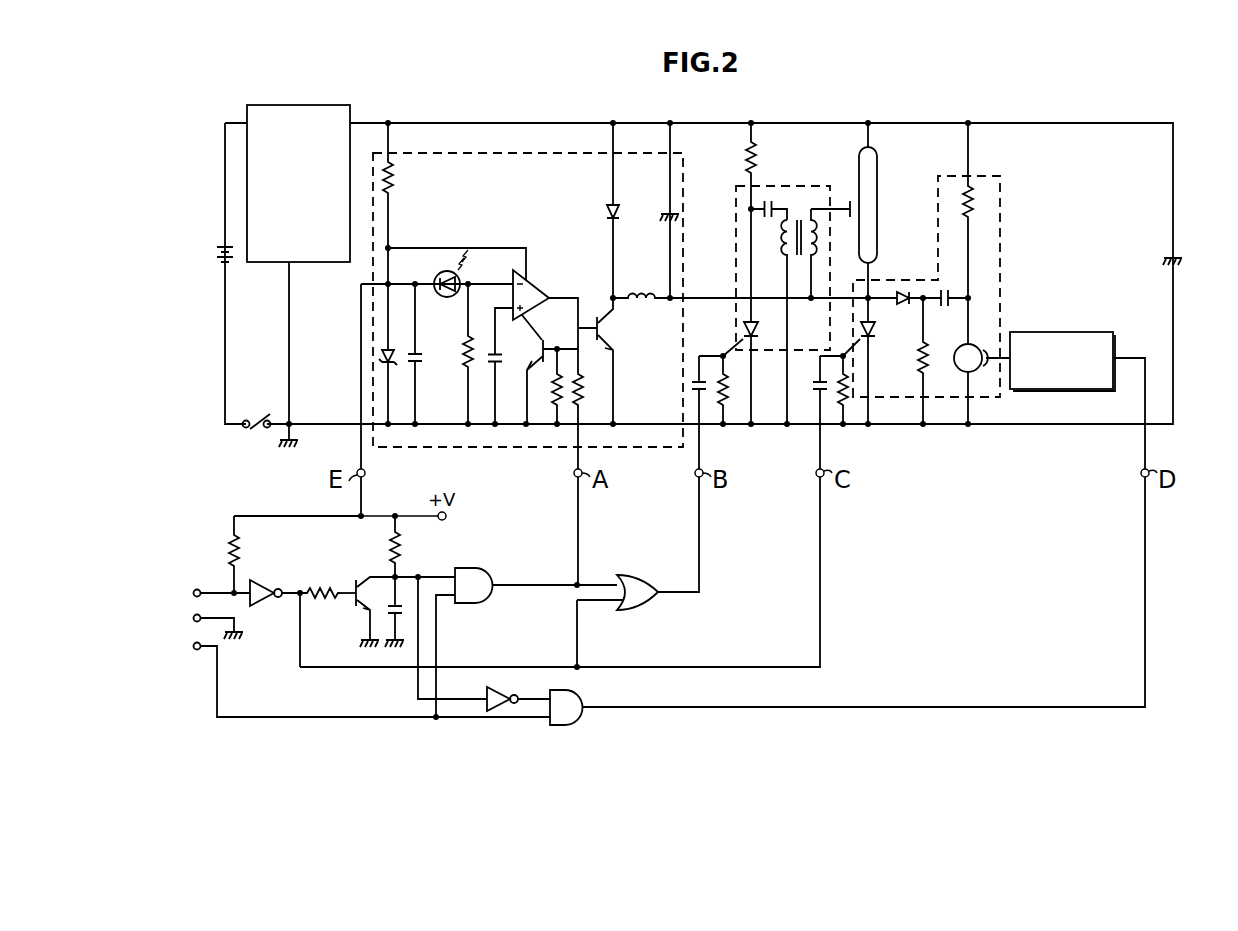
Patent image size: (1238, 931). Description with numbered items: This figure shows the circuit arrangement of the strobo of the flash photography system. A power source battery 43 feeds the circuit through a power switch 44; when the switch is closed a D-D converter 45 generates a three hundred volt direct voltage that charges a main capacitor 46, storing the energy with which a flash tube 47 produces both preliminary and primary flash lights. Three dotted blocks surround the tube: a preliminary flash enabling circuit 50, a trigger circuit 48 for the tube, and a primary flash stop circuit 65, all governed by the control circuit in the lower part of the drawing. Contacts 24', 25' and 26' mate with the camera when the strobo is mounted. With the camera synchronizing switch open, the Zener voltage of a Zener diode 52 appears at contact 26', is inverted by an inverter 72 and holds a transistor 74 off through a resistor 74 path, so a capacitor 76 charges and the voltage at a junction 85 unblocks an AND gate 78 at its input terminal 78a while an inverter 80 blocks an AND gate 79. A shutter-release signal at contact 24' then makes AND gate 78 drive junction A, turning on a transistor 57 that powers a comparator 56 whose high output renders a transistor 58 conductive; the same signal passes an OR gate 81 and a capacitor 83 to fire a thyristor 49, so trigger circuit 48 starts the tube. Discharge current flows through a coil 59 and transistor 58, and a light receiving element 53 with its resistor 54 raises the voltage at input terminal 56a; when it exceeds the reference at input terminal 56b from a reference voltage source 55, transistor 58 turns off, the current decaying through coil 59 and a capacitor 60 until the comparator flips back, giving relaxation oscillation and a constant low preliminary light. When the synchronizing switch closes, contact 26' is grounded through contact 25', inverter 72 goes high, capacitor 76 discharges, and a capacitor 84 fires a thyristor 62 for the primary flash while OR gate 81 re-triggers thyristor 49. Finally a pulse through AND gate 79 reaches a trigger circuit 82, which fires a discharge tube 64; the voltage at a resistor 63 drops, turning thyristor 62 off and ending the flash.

The power source battery 43 is at (215, 250).
The power switch 44 is at (253, 440).
The D-D converter 45 is at (313, 105).
The main capacitor 46 is at (1180, 262).
The flash tube 47 is at (872, 172).
The trigger circuit 48 is at (766, 186).
The thyristor 49 is at (743, 328).
The preliminary flash enabling circuit 50 is at (475, 155).
The Zener diode 52 is at (381, 354).
The light receiving element 53 is at (441, 285).
The resistor 54 is at (465, 348).
The reference voltage source 55 is at (512, 362).
The comparator 56 is at (537, 292).
The input terminal of comparator 56a is at (496, 288).
The input terminal of comparator 56b is at (500, 317).
The transistor 57 is at (547, 336).
The transistor 58 is at (612, 326).
The coil 59 is at (641, 279).
The capacitor 60 is at (664, 214).
The thyristor 62 is at (874, 325).
The resistor 63 is at (974, 207).
The discharge tube 64 is at (960, 350).
The primary flash stop circuit 65 is at (988, 176).
The inverter 72 is at (266, 603).
The transistor 74 is at (353, 598).
The capacitor 76 is at (383, 636).
The AND gate 78 is at (493, 571).
The input terminal of AND gate 78a is at (437, 575).
The AND gate 79 is at (577, 693).
The inverter 80 is at (485, 692).
The OR gate 81 is at (638, 612).
The trigger circuit 82 is at (1035, 334).
The capacitor 83 is at (693, 386).
The capacitor 84 is at (813, 391).
The junction 85 is at (386, 576).
The contact 24' is at (345, 676).
The contact 25' is at (191, 619).
The contact 26' is at (170, 584).